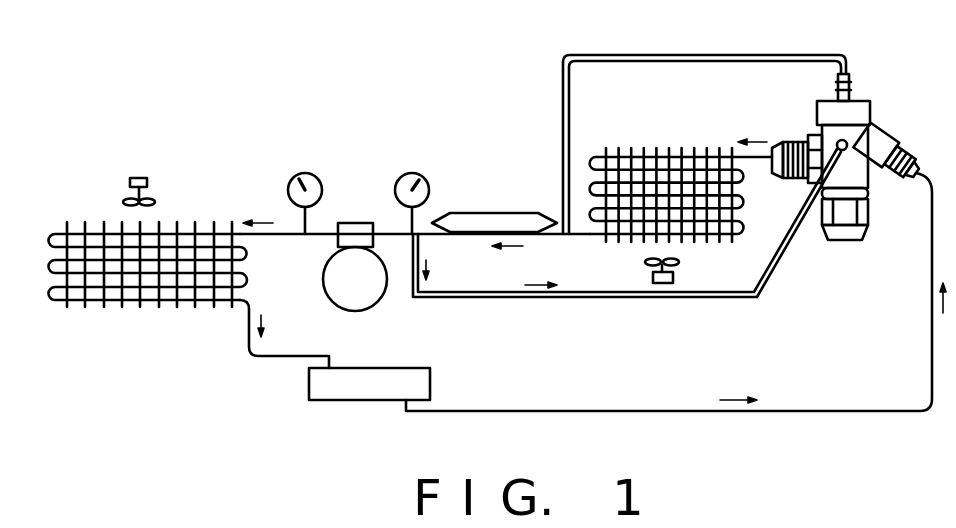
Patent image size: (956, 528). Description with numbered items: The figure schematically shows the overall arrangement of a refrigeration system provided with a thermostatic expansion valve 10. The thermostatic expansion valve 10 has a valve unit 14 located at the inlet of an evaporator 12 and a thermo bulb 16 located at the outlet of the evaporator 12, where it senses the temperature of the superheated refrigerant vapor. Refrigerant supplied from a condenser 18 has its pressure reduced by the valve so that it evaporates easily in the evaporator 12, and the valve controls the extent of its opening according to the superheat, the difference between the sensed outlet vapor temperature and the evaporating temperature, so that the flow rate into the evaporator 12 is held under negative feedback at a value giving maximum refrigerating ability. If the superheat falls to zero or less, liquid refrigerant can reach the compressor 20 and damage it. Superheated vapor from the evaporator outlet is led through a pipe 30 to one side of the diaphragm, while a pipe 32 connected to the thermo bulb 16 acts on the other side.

The thermostatic expansion valve 10 is at (886, 116).
The evaporator 12 is at (623, 143).
The valve unit 14 is at (822, 233).
The thermo bulb 16 is at (497, 213).
The condenser 18 is at (130, 310).
The compressor 20 is at (373, 303).
The pipe 30 is at (540, 298).
The pipe 32 is at (778, 54).